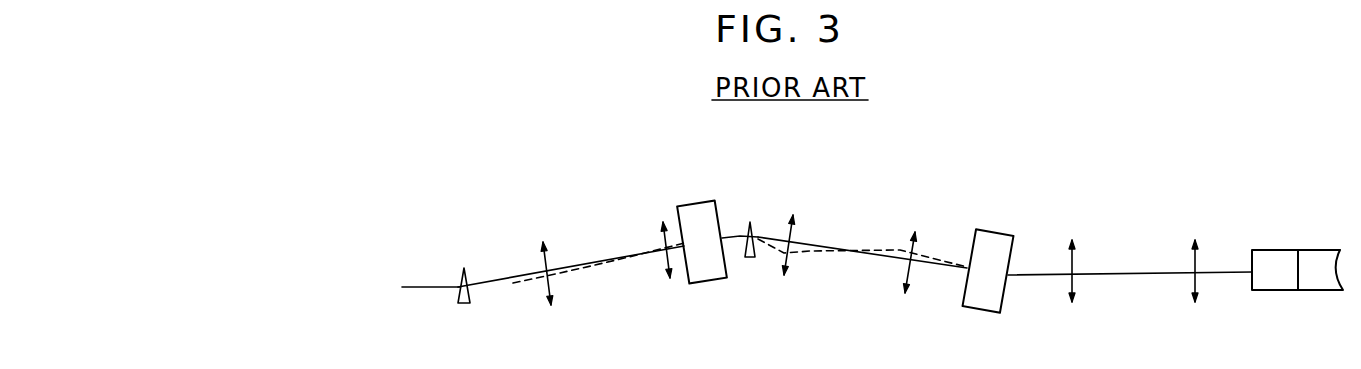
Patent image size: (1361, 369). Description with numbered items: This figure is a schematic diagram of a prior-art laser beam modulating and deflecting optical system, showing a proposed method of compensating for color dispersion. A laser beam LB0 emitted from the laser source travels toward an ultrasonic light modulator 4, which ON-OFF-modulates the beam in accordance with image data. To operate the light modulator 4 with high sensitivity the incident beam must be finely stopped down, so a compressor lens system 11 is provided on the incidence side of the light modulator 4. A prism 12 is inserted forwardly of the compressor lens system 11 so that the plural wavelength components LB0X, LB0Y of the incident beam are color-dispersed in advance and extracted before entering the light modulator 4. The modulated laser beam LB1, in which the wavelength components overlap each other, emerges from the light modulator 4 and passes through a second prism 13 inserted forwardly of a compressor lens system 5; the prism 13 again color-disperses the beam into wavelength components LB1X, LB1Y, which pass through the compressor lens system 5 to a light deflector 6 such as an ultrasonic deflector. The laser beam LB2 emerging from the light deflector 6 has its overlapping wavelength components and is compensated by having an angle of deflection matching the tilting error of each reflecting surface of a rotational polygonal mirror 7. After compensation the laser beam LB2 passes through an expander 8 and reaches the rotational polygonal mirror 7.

The ultrasonic light modulator 4 is at (694, 206).
The compressor lens system 5 is at (842, 274).
The light deflector 6 is at (992, 238).
The rotational polygonal mirror 7 is at (1318, 283).
The expander 8 is at (1135, 295).
The compressor lens system 11 is at (613, 277).
The prism 12 is at (467, 304).
The prism 13 is at (750, 260).
The laser beam LB0 is at (420, 283).
The wavelength component LB0X is at (493, 282).
The wavelength component LB0Y is at (515, 283).
The modulated laser beam LB1 is at (735, 238).
The wavelength component LB1X is at (802, 243).
The wavelength component LB1Y is at (808, 250).
The laser beam LB2 is at (1038, 275).